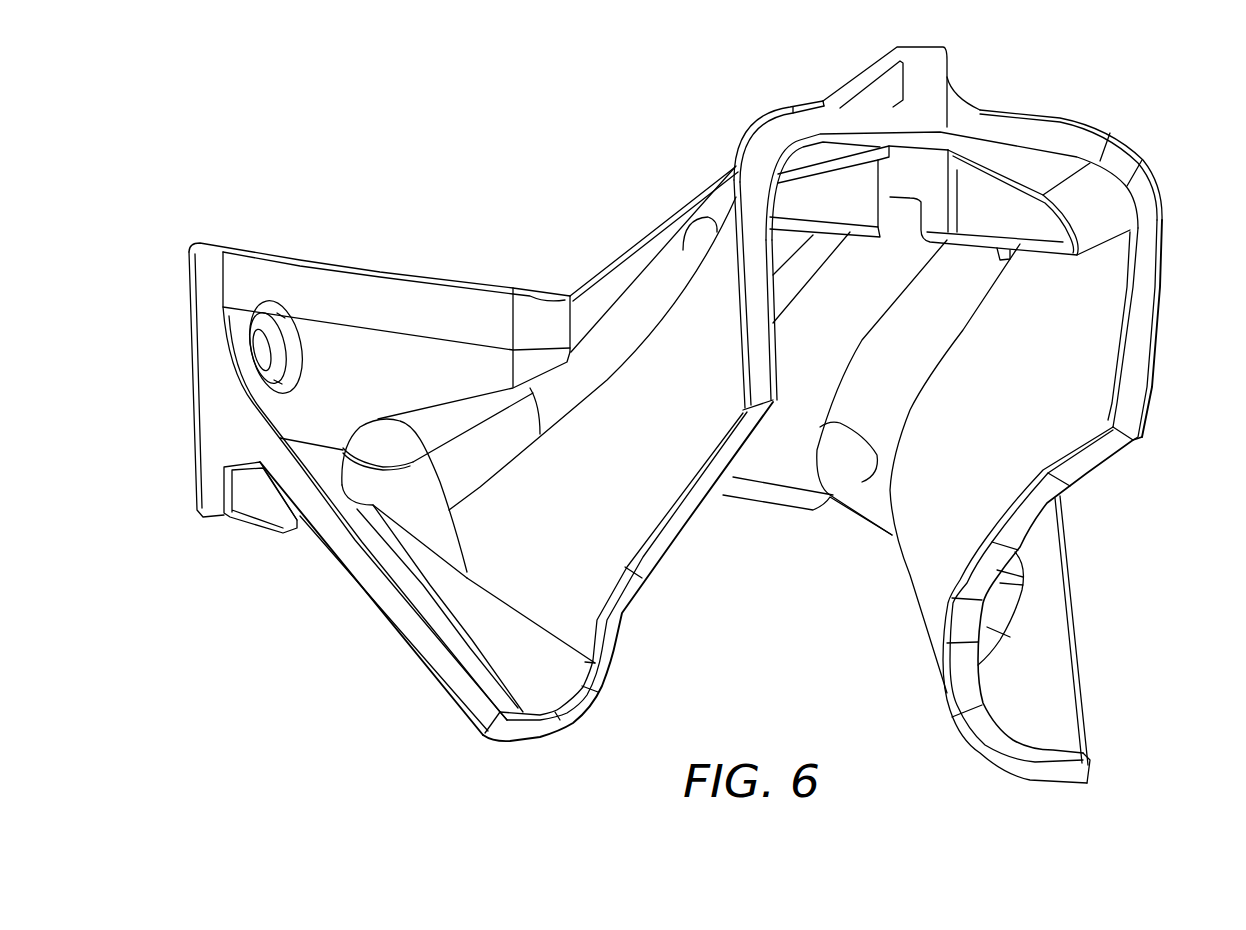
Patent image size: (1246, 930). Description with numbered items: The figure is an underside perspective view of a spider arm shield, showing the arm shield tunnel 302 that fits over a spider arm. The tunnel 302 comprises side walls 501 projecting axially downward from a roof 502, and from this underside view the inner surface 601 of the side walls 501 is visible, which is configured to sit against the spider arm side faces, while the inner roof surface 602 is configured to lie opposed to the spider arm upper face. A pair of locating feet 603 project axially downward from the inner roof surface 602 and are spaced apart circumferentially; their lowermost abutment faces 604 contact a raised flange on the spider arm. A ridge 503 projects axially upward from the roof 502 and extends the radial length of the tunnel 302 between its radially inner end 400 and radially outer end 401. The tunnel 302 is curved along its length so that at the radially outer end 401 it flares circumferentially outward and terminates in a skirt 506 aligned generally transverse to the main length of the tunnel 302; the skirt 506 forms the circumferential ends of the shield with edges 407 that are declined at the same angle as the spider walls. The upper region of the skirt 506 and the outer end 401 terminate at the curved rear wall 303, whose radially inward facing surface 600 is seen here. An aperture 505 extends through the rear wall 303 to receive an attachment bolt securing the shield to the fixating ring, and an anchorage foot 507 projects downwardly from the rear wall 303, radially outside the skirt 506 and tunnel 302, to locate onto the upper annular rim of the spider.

The arm shield tunnel 302 is at (1100, 458).
The rear wall 303 is at (207, 248).
The radially inner end 400 is at (1143, 305).
The radially outer end 401 is at (394, 457).
The edges 407 is at (370, 577).
The side walls 501 is at (664, 452).
The roof 502 is at (1060, 120).
The ridge 503 is at (937, 60).
The aperture 505 is at (275, 320).
The skirt 506 is at (457, 637).
The anchorage foot 507 is at (253, 500).
The radially inward facing surface 600 is at (333, 347).
The inner surface 601 is at (1014, 428).
The inner roof surface 602 is at (867, 423).
The locating feet 603 is at (1007, 220).
The lowermost abutment faces 604 is at (817, 230).